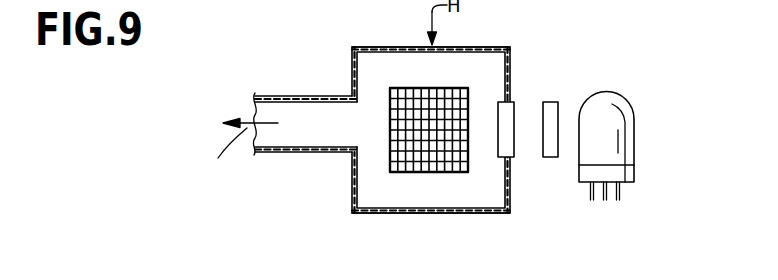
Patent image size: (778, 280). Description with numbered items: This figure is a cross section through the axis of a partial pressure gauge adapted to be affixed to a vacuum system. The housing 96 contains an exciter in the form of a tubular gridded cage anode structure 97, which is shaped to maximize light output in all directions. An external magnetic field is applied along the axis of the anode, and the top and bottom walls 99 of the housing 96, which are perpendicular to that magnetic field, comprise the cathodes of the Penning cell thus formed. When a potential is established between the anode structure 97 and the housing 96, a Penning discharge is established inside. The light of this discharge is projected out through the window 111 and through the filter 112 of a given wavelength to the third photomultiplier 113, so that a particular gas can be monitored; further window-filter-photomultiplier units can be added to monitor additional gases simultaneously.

The housing 96 is at (351, 200).
The tubular gridded cage anode structure 97 is at (407, 88).
The top and bottom walls 99 is at (486, 47).
The window 111 is at (512, 101).
The filter 112 is at (552, 101).
The third photomultiplier 113 is at (613, 106).